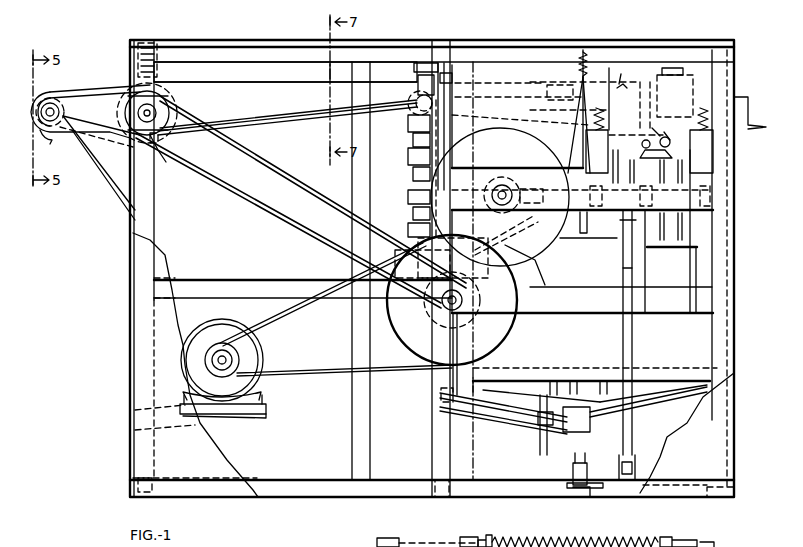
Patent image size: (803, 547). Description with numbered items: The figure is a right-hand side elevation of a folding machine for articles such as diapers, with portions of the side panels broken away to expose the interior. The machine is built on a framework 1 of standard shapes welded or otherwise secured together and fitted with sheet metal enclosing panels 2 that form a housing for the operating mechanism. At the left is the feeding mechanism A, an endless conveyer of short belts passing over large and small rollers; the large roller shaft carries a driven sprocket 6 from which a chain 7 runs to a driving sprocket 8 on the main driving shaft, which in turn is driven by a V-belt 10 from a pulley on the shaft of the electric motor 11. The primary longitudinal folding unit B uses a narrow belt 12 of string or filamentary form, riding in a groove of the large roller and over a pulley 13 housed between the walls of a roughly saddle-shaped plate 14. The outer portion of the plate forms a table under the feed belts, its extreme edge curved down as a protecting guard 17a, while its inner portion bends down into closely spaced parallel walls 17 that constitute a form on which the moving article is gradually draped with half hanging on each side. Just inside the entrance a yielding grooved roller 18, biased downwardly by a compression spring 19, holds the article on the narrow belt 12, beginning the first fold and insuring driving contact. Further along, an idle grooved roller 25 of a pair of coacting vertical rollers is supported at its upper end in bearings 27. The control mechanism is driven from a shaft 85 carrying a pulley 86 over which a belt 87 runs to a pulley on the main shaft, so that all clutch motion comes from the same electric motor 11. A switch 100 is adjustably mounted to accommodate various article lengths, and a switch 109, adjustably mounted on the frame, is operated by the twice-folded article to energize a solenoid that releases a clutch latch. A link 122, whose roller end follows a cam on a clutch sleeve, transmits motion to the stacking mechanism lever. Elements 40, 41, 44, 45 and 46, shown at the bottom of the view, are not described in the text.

The framework 1 is at (442, 458).
The sheet metal enclosing panels 2 is at (433, 365).
The driven sprocket 6 is at (158, 146).
The chain 7 is at (238, 192).
The driving sprocket 8 is at (470, 310).
The V-belt 10 is at (305, 310).
The electric motor 11 is at (266, 350).
The narrow belt 12 is at (264, 122).
The pulley 13 is at (423, 62).
The plate 14 is at (285, 86).
The parallel walls 17 is at (304, 112).
The protecting guard 17a is at (54, 126).
The yielding grooved roller 18 is at (158, 67).
The compression spring 19 is at (150, 65).
The roller 25 is at (410, 183).
The bearings 27 is at (441, 63).
The rod 40 is at (520, 545).
The stop 41 is at (660, 545).
The collar 44 is at (475, 545).
The link rod 45 is at (433, 545).
The spring 46 is at (571, 545).
The shaft 85 is at (504, 206).
The pulley 86 is at (556, 228).
The belt 87 is at (528, 278).
The switch 100 is at (597, 100).
The switch 109 is at (670, 142).
The link 122 is at (628, 343).
The feeding mechanism A is at (92, 118).
The primary longitudinal folding unit B is at (268, 93).